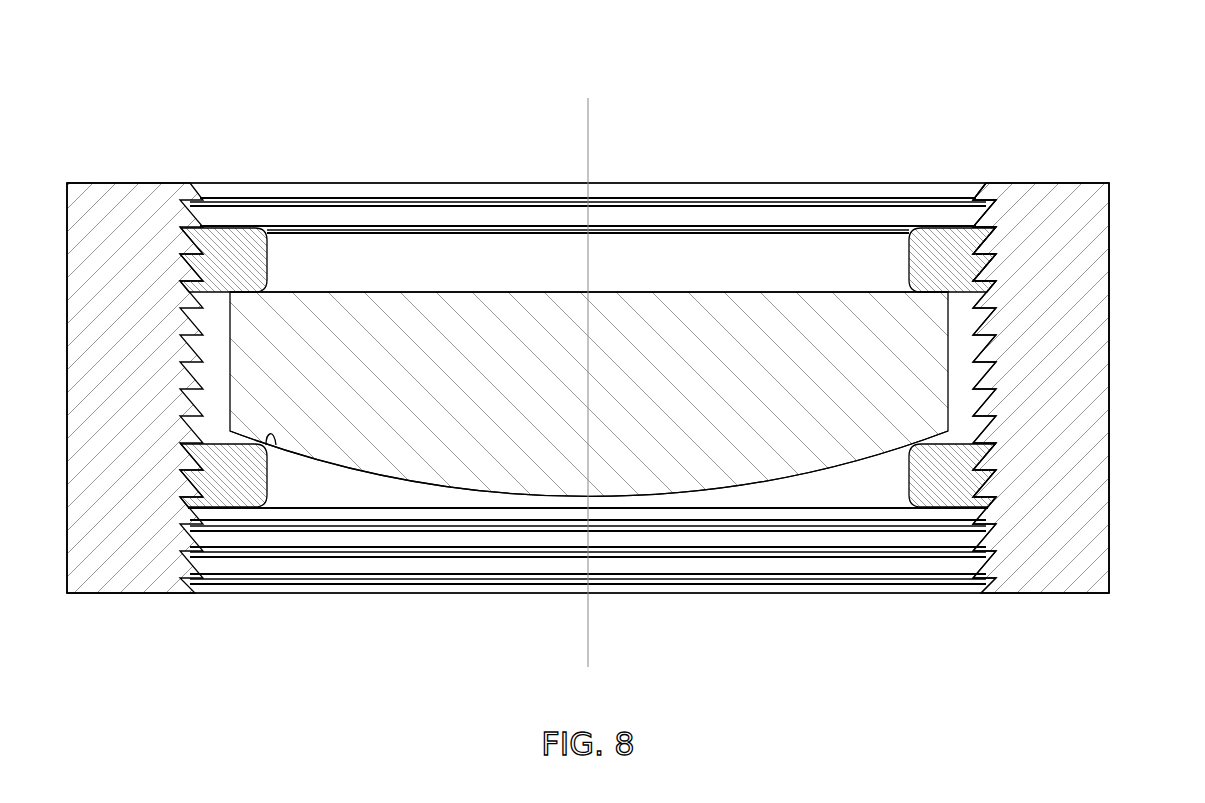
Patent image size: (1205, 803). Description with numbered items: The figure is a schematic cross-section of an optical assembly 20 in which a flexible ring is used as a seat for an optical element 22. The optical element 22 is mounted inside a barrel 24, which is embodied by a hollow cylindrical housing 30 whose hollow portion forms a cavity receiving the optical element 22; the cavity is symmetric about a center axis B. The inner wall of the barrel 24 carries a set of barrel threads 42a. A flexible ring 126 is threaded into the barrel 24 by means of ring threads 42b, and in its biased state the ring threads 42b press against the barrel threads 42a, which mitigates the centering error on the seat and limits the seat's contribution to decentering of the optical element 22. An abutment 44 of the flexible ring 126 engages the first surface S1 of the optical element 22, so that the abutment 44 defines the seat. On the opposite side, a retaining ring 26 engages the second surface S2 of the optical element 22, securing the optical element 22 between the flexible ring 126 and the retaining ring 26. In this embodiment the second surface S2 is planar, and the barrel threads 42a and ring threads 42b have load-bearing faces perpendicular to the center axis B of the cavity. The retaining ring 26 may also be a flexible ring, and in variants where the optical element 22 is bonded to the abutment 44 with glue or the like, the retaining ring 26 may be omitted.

The optical assembly 20 is at (918, 93).
The optical element 22 is at (667, 302).
The barrel 24 is at (1092, 205).
The retaining ring 26 is at (940, 258).
The flexible ring 126 is at (946, 478).
The hollow cylindrical housing 30 is at (1095, 292).
The barrel threads 42a is at (985, 246).
The ring threads 42b is at (975, 242).
The abutment 44 is at (275, 446).
The first surface S1 is at (830, 470).
The second surface S2 is at (790, 290).
The center axis B is at (588, 118).